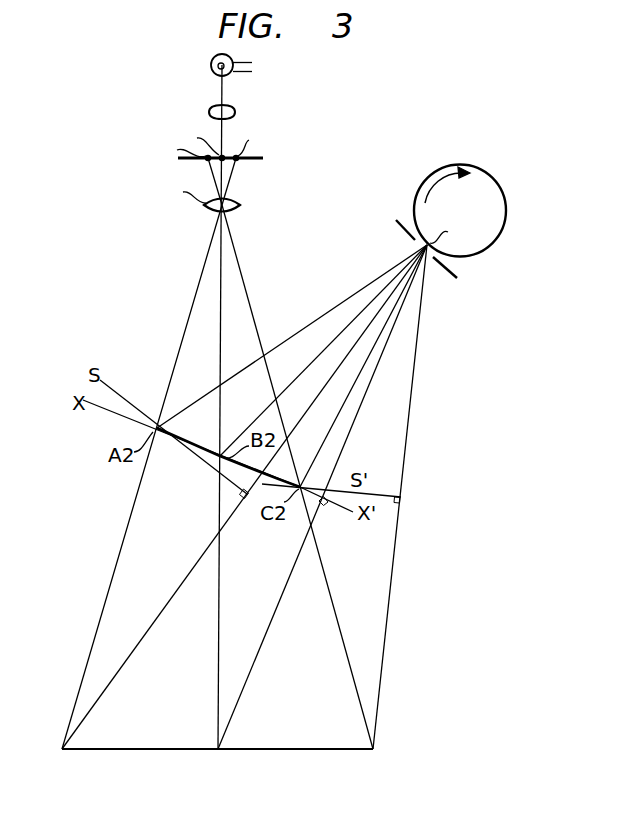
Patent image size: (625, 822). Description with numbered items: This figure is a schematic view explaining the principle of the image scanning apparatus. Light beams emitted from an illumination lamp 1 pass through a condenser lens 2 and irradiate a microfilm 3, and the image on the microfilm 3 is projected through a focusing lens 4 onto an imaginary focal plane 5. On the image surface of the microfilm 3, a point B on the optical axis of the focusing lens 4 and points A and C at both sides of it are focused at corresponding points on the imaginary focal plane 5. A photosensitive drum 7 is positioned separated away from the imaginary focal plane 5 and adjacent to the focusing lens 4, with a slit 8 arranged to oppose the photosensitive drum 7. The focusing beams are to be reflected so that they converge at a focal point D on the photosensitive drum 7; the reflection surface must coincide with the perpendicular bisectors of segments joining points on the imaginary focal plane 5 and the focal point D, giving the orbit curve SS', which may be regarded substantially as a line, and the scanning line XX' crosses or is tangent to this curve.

The illumination lamp 1 is at (210, 66).
The condenser lens 2 is at (208, 113).
The microfilm 3 is at (264, 158).
The focusing lens 4 is at (240, 204).
The imaginary focal plane 5 is at (223, 772).
The photosensitive drum 7 is at (505, 197).
The slit 8 is at (400, 222).